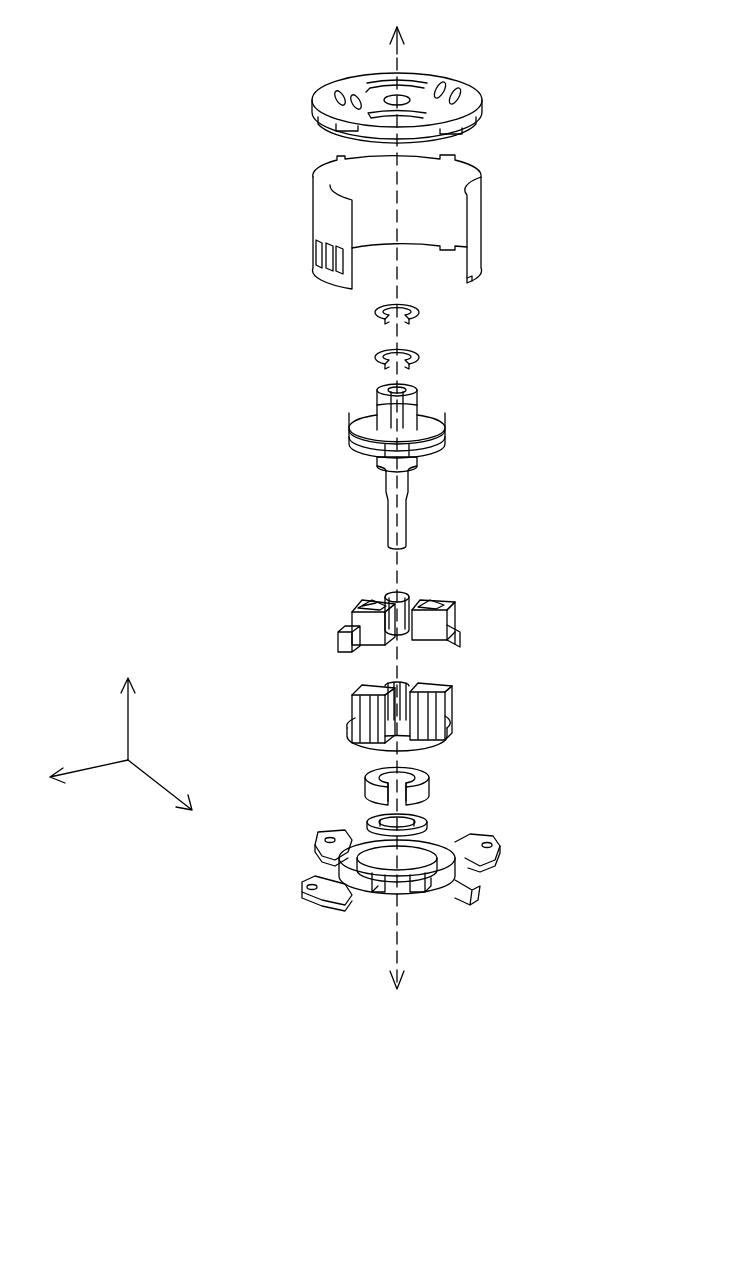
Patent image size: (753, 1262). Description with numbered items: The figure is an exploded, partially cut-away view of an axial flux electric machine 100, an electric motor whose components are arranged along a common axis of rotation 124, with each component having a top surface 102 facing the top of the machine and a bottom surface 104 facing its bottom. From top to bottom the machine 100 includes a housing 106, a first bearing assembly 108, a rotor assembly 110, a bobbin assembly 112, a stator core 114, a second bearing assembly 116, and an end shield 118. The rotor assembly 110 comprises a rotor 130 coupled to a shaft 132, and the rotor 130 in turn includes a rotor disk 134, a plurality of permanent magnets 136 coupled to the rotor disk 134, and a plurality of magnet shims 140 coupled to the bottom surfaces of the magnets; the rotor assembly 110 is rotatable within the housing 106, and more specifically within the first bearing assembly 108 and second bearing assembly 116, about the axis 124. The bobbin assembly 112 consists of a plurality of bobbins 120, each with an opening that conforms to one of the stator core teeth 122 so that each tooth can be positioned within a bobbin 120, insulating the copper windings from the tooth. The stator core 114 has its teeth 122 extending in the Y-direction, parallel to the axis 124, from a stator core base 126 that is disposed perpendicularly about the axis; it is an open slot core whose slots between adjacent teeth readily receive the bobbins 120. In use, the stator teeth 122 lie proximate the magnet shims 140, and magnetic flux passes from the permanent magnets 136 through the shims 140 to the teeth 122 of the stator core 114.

The axial flux electric machine 100 is at (592, 78).
The top surface 102 is at (264, 126).
The bottom surface 104 is at (262, 945).
The housing 106 is at (483, 231).
The first bearing assembly 108 is at (450, 336).
The rotor assembly 110 is at (458, 460).
The bobbin assembly 112 is at (476, 596).
The stator core 114 is at (447, 710).
The second bearing assembly 116 is at (462, 780).
The end shield 118 is at (492, 873).
The bobbin 120 is at (333, 598).
The stator core teeth 122 is at (358, 699).
The axis of rotation 124 is at (397, 50).
The stator core base 126 is at (352, 740).
The rotor 130 is at (350, 420).
The shaft 132 is at (378, 456).
The rotor disk 134 is at (420, 398).
The plurality of permanent magnets 136 is at (462, 428).
The plurality of magnet shims 140 is at (440, 465).